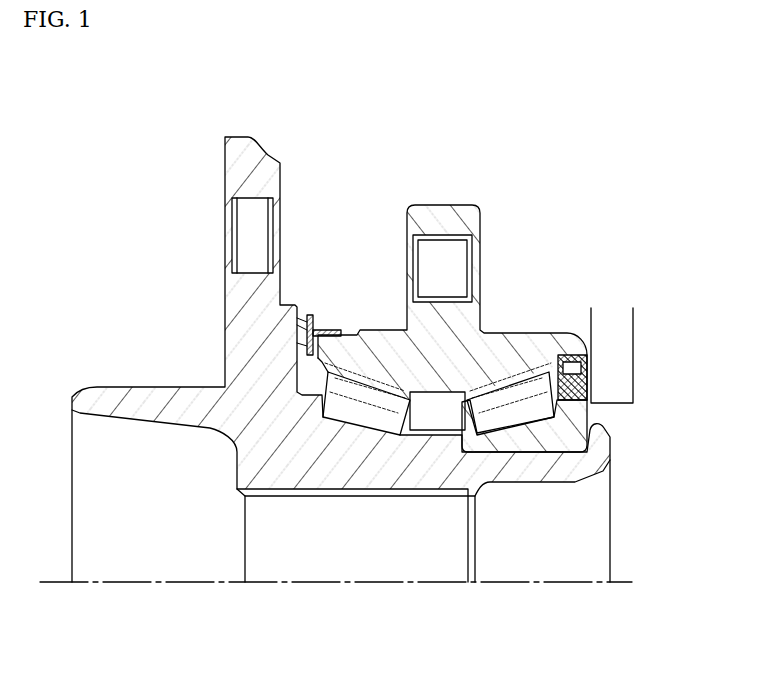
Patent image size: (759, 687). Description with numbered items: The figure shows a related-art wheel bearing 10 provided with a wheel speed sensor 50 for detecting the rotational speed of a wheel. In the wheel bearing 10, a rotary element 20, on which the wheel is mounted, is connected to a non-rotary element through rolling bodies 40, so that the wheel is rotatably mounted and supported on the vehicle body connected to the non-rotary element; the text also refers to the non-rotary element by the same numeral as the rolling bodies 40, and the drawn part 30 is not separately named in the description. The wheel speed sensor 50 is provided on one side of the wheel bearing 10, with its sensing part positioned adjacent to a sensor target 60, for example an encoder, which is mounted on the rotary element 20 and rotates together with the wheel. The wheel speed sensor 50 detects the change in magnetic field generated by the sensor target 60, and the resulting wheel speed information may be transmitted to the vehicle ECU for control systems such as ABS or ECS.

The wheel bearing 10 is at (568, 70).
The rotary element 20 is at (236, 333).
The outer ring 30 is at (503, 348).
The rolling bodies 40 is at (363, 418).
The wheel speed sensor 50 is at (625, 363).
The sensor target 60 is at (587, 337).